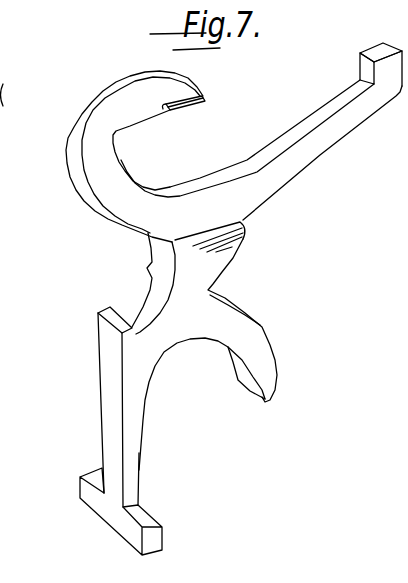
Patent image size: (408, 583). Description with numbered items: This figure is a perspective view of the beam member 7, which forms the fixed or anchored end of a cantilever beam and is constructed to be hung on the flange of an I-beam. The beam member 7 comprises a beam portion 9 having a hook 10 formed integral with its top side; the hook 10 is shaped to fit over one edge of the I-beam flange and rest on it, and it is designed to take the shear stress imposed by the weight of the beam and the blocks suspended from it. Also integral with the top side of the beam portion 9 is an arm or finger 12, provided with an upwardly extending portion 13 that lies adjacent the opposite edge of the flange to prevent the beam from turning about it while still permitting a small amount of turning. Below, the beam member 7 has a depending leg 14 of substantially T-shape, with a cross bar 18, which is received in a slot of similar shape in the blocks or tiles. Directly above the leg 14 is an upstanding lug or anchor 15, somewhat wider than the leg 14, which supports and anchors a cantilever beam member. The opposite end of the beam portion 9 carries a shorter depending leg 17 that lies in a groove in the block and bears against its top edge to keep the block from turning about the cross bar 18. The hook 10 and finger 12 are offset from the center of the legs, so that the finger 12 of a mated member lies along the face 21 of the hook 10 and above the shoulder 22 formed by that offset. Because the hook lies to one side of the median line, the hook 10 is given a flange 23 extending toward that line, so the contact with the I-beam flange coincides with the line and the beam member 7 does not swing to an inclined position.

The beam member 7 is at (117, 305).
The beam portion 9 is at (180, 337).
The hook 10 is at (68, 169).
The arm or finger 12 is at (339, 137).
The upwardly extending portion 13 is at (359, 64).
The depending leg 14 is at (107, 418).
The upstanding lug or anchor 15 is at (115, 309).
The depending leg 17 is at (277, 372).
The cross bar 18 is at (160, 540).
The face 21 is at (228, 205).
The shoulder 22 is at (245, 237).
The flange 23 is at (197, 105).